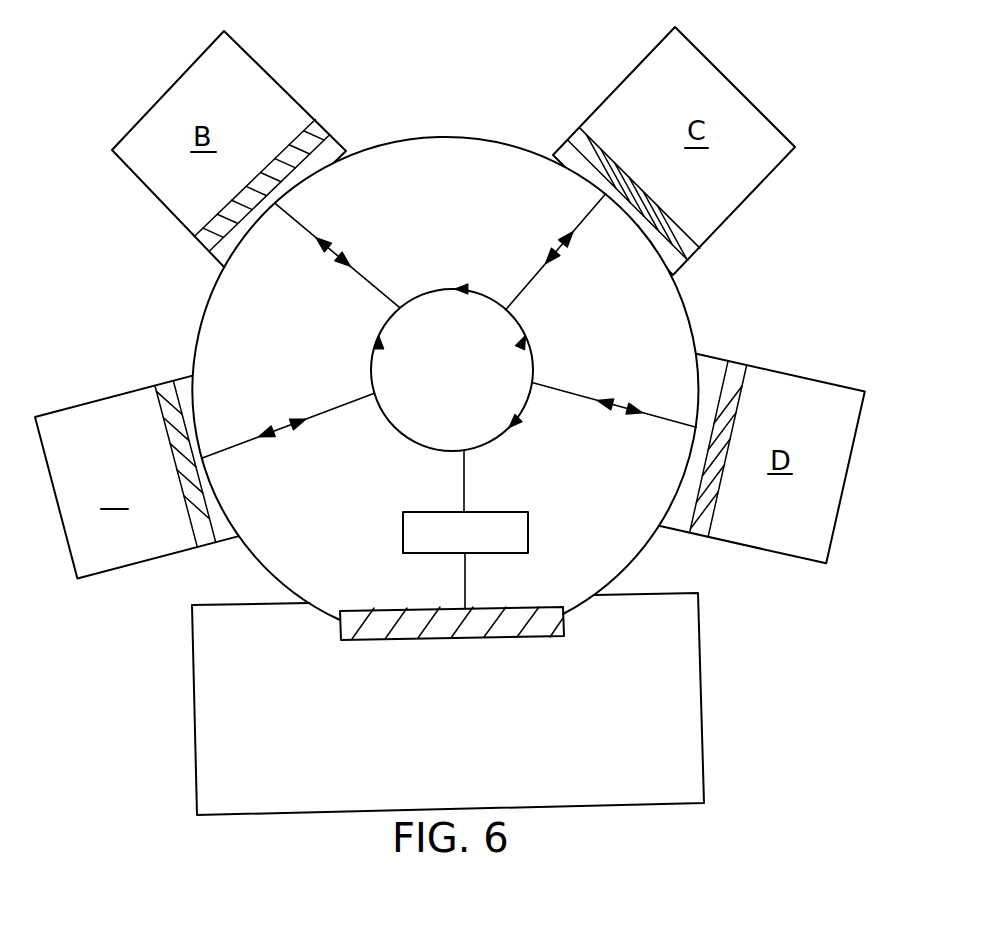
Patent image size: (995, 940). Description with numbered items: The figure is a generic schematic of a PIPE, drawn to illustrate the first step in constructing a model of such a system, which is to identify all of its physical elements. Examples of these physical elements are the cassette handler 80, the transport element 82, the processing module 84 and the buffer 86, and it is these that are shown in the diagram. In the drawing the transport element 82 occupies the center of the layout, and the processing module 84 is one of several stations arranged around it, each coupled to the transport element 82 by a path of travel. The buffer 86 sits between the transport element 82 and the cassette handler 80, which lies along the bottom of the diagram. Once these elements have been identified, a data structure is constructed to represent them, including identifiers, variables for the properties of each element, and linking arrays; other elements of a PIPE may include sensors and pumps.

The cassette handler 80 is at (688, 688).
The transport element 82 is at (527, 322).
The processing module 84 is at (118, 555).
The buffer 86 is at (528, 526).